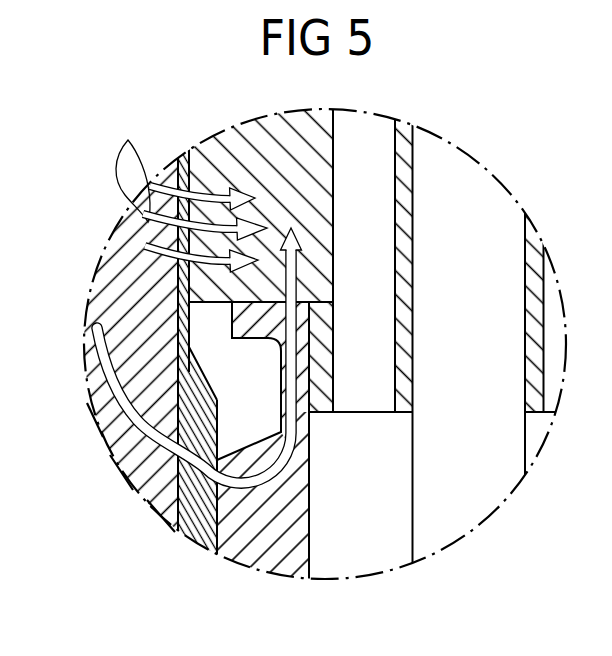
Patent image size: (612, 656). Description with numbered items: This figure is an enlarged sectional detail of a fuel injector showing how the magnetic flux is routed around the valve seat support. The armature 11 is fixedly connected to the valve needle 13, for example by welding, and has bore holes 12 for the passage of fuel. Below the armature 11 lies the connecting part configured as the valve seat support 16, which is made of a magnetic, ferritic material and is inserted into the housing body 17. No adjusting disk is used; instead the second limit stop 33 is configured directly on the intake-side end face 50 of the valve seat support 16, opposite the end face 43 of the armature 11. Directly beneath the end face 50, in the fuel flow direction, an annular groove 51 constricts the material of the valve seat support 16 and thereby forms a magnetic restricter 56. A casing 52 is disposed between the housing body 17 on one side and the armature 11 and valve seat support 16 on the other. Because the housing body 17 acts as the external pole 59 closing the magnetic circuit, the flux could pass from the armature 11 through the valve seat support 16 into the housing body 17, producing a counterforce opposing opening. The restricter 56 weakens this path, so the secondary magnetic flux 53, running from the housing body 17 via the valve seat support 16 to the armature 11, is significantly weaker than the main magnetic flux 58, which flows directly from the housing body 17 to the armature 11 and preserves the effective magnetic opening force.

The armature 11 is at (230, 136).
The bore holes 12 is at (395, 272).
The valve needle 13 is at (452, 352).
The valve seat support 16 is at (262, 562).
The housing body 17 is at (118, 232).
The second limit stop 33 is at (306, 296).
The end face of armature 43 is at (218, 317).
The intake-side end face 50 is at (240, 295).
The annular groove 51 is at (277, 362).
The casing 52 is at (190, 522).
The secondary magnetic flux 53 is at (309, 454).
The magnetic restricter 56 is at (240, 373).
The main magnetic flux 58 is at (189, 188).
The external pole 59 is at (147, 490).